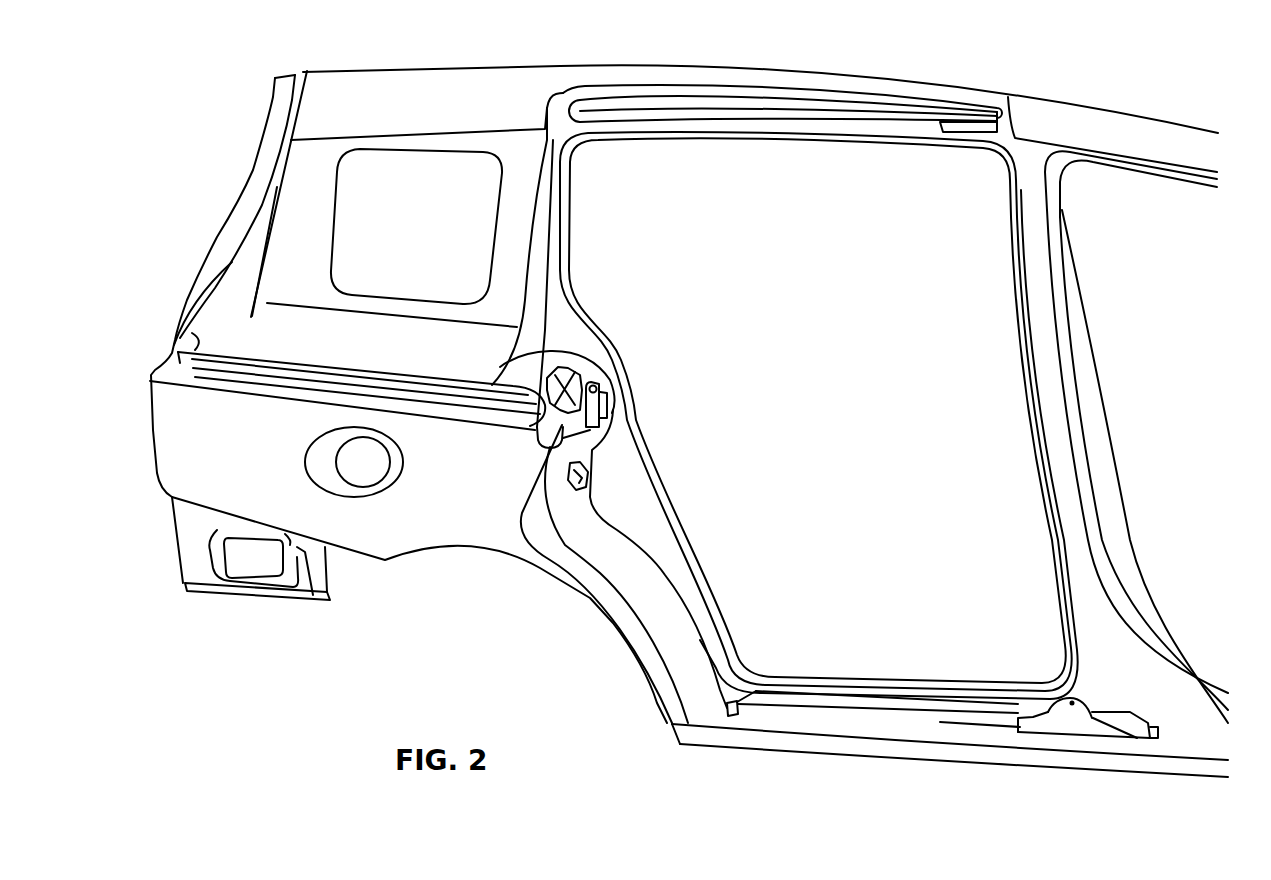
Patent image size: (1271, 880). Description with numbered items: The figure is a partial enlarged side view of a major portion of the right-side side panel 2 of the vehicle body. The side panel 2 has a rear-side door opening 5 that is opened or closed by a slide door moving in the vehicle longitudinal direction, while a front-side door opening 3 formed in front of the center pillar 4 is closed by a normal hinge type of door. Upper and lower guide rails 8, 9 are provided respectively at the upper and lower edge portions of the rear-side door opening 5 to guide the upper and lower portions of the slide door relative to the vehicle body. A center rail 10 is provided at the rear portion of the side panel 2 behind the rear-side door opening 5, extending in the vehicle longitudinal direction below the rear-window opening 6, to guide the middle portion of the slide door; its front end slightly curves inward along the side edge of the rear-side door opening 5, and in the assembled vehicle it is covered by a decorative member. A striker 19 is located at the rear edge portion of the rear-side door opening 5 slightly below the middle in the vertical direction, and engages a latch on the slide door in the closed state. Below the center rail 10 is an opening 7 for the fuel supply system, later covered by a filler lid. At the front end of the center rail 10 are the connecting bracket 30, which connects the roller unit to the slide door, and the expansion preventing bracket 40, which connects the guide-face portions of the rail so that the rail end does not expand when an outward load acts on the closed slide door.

The side panel 2 is at (1001, 88).
The front-side door opening 3 is at (1147, 174).
The center pillar 4 is at (1063, 364).
The rear-side door opening 5 is at (945, 677).
The rear-window opening 6 is at (420, 150).
The opening for a fuel supply system 7 is at (358, 498).
The upper guide rail 8 is at (790, 112).
The lower guide rail 9 is at (870, 718).
The center rail 10 is at (418, 393).
The striker 19 is at (590, 487).
The connecting bracket 30 is at (527, 440).
The expansion preventing bracket 40 is at (573, 372).